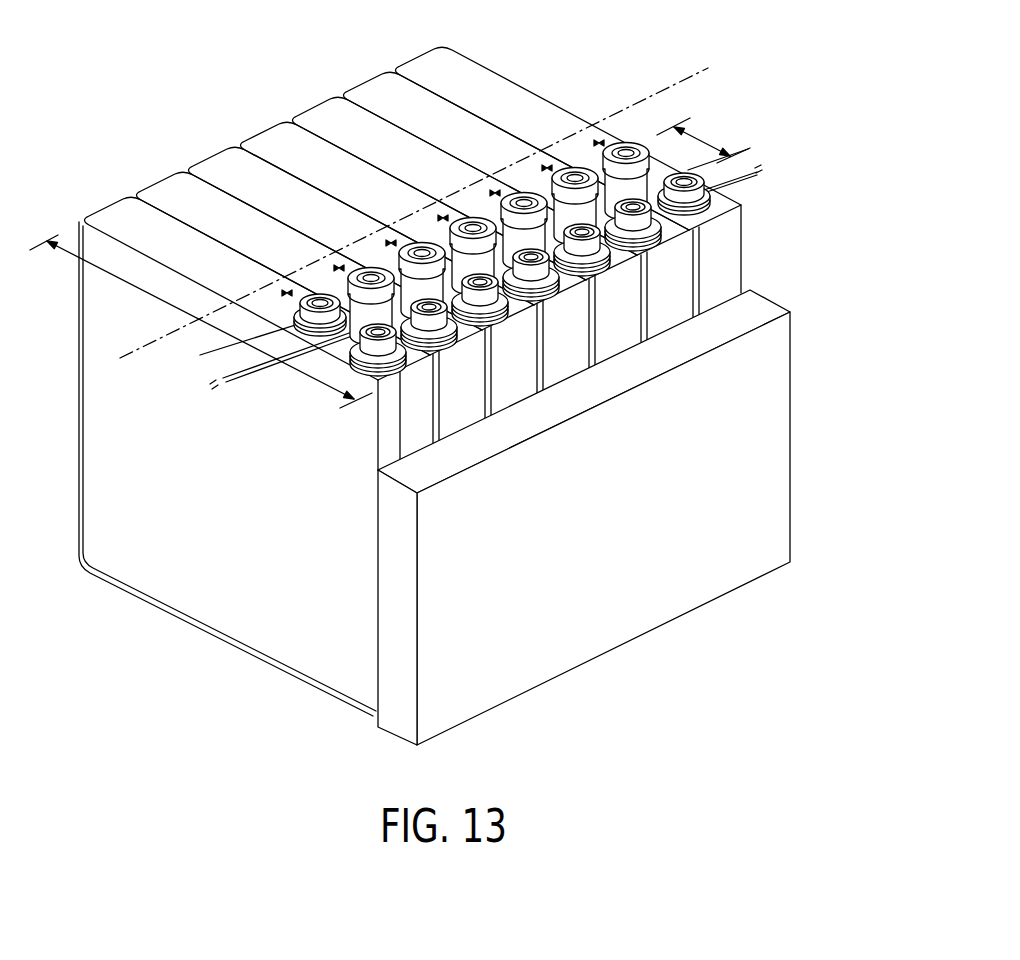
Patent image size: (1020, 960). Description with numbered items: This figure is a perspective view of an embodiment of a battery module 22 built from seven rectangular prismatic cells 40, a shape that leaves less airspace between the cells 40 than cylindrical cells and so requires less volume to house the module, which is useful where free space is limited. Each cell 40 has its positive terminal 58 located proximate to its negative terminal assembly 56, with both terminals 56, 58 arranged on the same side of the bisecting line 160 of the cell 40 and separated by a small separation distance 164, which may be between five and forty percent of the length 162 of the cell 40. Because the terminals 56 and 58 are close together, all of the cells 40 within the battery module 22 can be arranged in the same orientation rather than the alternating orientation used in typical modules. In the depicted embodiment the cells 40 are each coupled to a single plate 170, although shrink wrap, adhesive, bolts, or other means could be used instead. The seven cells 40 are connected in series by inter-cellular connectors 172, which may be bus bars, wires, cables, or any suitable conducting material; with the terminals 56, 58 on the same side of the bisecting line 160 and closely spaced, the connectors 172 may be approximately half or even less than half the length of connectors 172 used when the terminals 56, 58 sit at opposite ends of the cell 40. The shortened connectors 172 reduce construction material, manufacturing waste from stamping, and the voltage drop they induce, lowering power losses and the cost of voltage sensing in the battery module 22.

The battery module 22 is at (673, 668).
The cell 40 is at (115, 217).
The negative terminal assembly 56 is at (424, 287).
The positive terminal 58 is at (420, 242).
The bisecting line 160 is at (648, 98).
The length 162 is at (150, 292).
The separation distance 164 is at (715, 152).
The plate 170 is at (775, 437).
The inter-cellular connector 172 is at (479, 248).